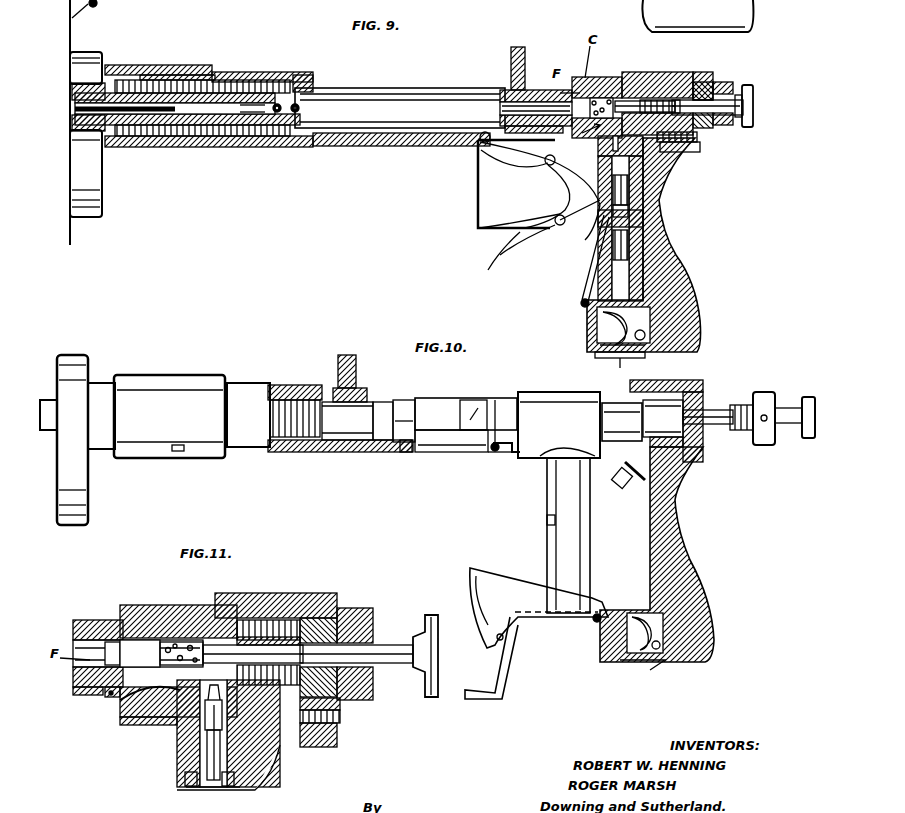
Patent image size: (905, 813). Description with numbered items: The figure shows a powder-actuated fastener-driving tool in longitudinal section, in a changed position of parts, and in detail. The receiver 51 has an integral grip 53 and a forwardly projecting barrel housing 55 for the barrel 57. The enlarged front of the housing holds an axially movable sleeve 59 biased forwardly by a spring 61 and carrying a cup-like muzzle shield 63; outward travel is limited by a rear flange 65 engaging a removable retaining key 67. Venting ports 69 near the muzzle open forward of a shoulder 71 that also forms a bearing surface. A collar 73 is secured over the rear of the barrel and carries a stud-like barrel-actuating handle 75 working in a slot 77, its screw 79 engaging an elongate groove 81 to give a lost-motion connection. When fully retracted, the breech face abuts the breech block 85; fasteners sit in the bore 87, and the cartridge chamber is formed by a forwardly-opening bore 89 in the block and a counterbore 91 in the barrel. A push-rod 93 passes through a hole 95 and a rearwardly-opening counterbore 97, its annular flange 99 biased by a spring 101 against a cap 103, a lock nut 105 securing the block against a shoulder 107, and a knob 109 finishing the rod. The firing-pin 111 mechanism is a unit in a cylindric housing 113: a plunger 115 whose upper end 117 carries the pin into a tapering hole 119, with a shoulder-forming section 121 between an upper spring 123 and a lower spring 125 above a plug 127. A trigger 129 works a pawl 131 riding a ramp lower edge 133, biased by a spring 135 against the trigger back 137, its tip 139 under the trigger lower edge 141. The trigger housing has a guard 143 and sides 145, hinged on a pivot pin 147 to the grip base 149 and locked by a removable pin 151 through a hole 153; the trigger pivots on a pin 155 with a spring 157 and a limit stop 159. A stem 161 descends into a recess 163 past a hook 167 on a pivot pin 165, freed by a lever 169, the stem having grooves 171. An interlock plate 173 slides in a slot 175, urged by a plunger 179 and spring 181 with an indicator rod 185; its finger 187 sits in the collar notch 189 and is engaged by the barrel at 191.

In FIG. 9, the receiver 51 is at (700, 72).
In FIG. 10, the receiver 51 is at (672, 378).
In FIG. 11, the receiver 51 is at (310, 590).
In FIG. 9, the grip 53 is at (700, 262).
In FIG. 10, the grip 53 is at (710, 598).
In FIG. 9, the barrel housing 55 is at (335, 148).
In FIG. 9, the barrel 57 is at (380, 95).
In FIG. 10, the barrel 57 is at (365, 452).
In FIG. 9, the sleeve 59 is at (150, 148).
In FIG. 9, the spring 61 is at (258, 148).
In FIG. 10, the spring 61 is at (282, 450).
In FIG. 9, the muzzle shield 63 is at (102, 197).
In FIG. 10, the muzzle shield 63 is at (88, 505).
In FIG. 9, the rear flange 65 is at (212, 148).
In FIG. 9, the retaining key 67 is at (175, 147).
In FIG. 9, the venting ports 69 is at (300, 108).
In FIG. 9, the shoulder 71 is at (305, 75).
In FIG. 10, the shoulder 71 is at (330, 452).
In FIG. 9, the collar 73 is at (565, 70).
In FIG. 10, the collar 73 is at (392, 400).
In FIG. 11, the collar 73 is at (100, 695).
In FIG. 9, the barrel-actuating handle 75 is at (510, 60).
In FIG. 10, the barrel-actuating handle 75 is at (330, 367).
In FIG. 9, the slot 77 is at (430, 90).
In FIG. 10, the slot 77 is at (432, 398).
In FIG. 9, the screw 79 is at (515, 47).
In FIG. 10, the screw 79 is at (345, 355).
In FIG. 9, the elongate groove 81 is at (530, 88).
In FIG. 10, the elongate groove 81 is at (340, 415).
In FIG. 9, the breech block 85 is at (600, 78).
In FIG. 10, the breech block 85 is at (545, 400).
In FIG. 11, the breech block 85 is at (200, 605).
In FIG. 11, the bore 87 is at (73, 660).
In FIG. 9, the forwardly-opening bore 89 is at (598, 98).
In FIG. 11, the forwardly-opening bore 89 is at (178, 605).
In FIG. 9, the counterbore 91 is at (572, 90).
In FIG. 11, the counterbore 91 is at (95, 620).
In FIG. 9, the push-rod 93 is at (632, 72).
In FIG. 10, the push-rod 93 is at (713, 424).
In FIG. 11, the push-rod 93 is at (305, 617).
In FIG. 9, the hole 95 is at (650, 98).
In FIG. 11, the hole 95 is at (245, 618).
In FIG. 11, the rearwardly-opening counterbore 97 is at (262, 636).
In FIG. 9, the annular flange 99 is at (710, 80).
In FIG. 11, the annular flange 99 is at (315, 654).
In FIG. 9, the spring 101 is at (672, 98).
In FIG. 11, the spring 101 is at (253, 654).
In FIG. 9, the cap 103 is at (733, 92).
In FIG. 10, the cap 103 is at (742, 405).
In FIG. 11, the cap 103 is at (373, 632).
In FIG. 9, the lock nut 105 is at (730, 82).
In FIG. 10, the lock nut 105 is at (770, 392).
In FIG. 11, the lock nut 105 is at (373, 612).
In FIG. 9, the shoulder 107 is at (668, 72).
In FIG. 10, the shoulder 107 is at (660, 400).
In FIG. 11, the shoulder 107 is at (285, 618).
In FIG. 9, the knob 109 is at (755, 95).
In FIG. 10, the knob 109 is at (805, 440).
In FIG. 11, the knob 109 is at (432, 612).
In FIG. 9, the firing-pin 111 is at (603, 146).
In FIG. 11, the firing-pin 111 is at (177, 720).
In FIG. 9, the cylindric housing 113 is at (596, 270).
In FIG. 10, the cylindric housing 113 is at (537, 485).
In FIG. 9, the plunger 115 is at (643, 170).
In FIG. 11, the plunger 115 is at (205, 775).
In FIG. 9, the upper end 117 is at (614, 227).
In FIG. 11, the upper end 117 is at (200, 740).
In FIG. 11, the tapering hole 119 is at (128, 718).
In FIG. 9, the shoulder-forming section 121 is at (643, 208).
In FIG. 9, the spring 123 is at (643, 195).
In FIG. 11, the spring 123 is at (260, 790).
In FIG. 9, the spring 125 is at (643, 232).
In FIG. 9, the plug 127 is at (585, 288).
In FIG. 9, the trigger 129 is at (547, 191).
In FIG. 9, the pawl 131 is at (556, 225).
In FIG. 9, the lower edge 133 is at (580, 250).
In FIG. 9, the spring 135 is at (643, 222).
In FIG. 9, the back 137 is at (557, 168).
In FIG. 9, the tip 139 is at (524, 247).
In FIG. 9, the lower edge 141 is at (545, 198).
In FIG. 9, the guard 143 is at (478, 213).
In FIG. 9, the sides 145 is at (481, 150).
In FIG. 9, the pivot pin 147 is at (580, 303).
In FIG. 10, the pivot pin 147 is at (475, 570).
In FIG. 9, the base 149 is at (597, 336).
In FIG. 10, the base 149 is at (627, 650).
In FIG. 9, the removable pin 151 is at (478, 150).
In FIG. 10, the removable pin 151 is at (497, 400).
In FIG. 10, the hole 153 is at (490, 455).
In FIG. 9, the pin 155 is at (494, 259).
In FIG. 9, the spring 157 is at (540, 212).
In FIG. 9, the limit stop 159 is at (495, 236).
In FIG. 9, the stem 161 is at (700, 275).
In FIG. 9, the recess 163 is at (700, 352).
In FIG. 9, the pivot pin 165 is at (700, 336).
In FIG. 9, the hook 167 is at (600, 322).
In FIG. 9, the lever 169 is at (628, 364).
In FIG. 9, the grooves 171 is at (702, 290).
In FIG. 9, the interlock plate 173 is at (545, 160).
In FIG. 10, the interlock plate 173 is at (505, 460).
In FIG. 11, the interlock plate 173 is at (118, 712).
In FIG. 11, the slot 175 is at (214, 787).
In FIG. 9, the plunger 179 is at (643, 150).
In FIG. 11, the plunger 179 is at (330, 745).
In FIG. 9, the spring 181 is at (700, 148).
In FIG. 11, the spring 181 is at (340, 703).
In FIG. 9, the indicator rod 185 is at (697, 137).
In FIG. 11, the indicator rod 185 is at (340, 718).
In FIG. 10, the finger 187 is at (540, 436).
In FIG. 11, the finger 187 is at (118, 700).
In FIG. 10, the notch 189 is at (400, 452).
In FIG. 11, the notch 189 is at (105, 697).
In FIG. 10, the engagement point 191 is at (478, 388).
In FIG. 11, the engagement point 191 is at (105, 690).